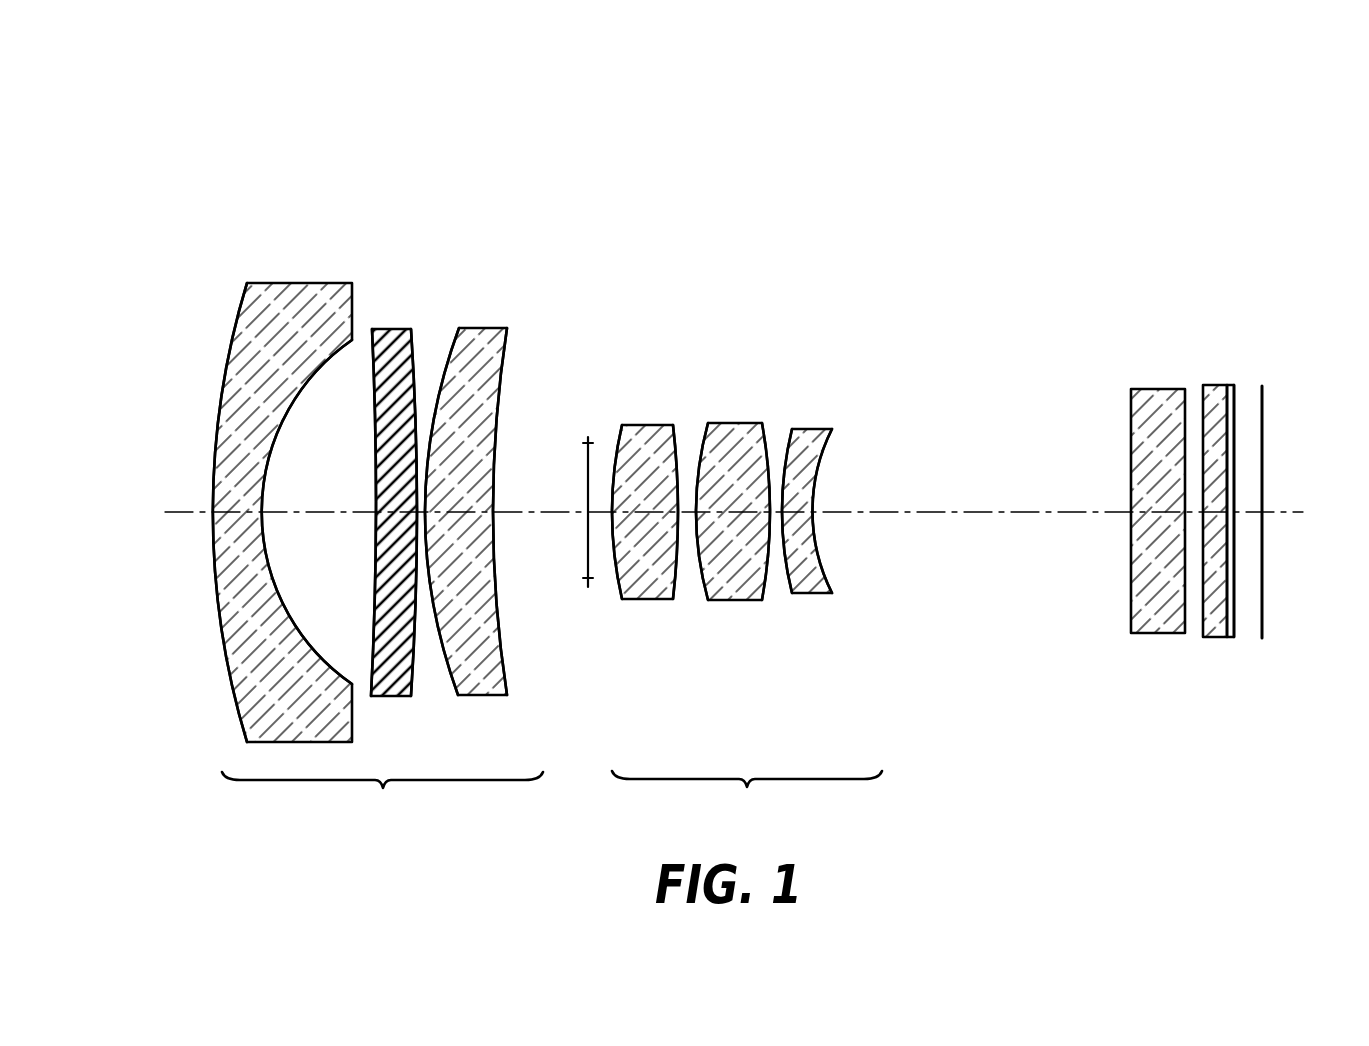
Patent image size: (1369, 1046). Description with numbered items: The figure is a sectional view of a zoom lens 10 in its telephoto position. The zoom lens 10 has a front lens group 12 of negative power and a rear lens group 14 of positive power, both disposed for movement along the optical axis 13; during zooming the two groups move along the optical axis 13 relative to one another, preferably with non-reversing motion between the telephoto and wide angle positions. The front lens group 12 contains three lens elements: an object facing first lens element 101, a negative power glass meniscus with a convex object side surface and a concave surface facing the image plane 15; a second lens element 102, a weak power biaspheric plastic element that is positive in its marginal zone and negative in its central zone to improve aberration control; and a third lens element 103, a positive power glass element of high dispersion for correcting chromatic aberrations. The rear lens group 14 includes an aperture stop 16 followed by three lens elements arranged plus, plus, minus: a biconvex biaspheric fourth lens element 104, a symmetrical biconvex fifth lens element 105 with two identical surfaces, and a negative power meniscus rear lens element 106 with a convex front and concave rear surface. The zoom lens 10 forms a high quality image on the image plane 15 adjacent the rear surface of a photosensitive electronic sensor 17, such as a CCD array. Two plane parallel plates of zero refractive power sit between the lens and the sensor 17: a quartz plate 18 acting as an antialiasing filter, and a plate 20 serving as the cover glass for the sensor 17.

The zoom lens 10 is at (903, 149).
The front lens group 12 is at (382, 797).
The optical axis 13 is at (1280, 514).
The rear lens group 14 is at (747, 796).
The image plane 15 is at (1264, 440).
The aperture stop 16 is at (588, 437).
The photosensitive electronic sensor 17 is at (1231, 385).
The quartz plate 18 is at (1150, 389).
The cover glass plate 20 is at (1212, 385).
The first lens element 101 is at (247, 283).
The second lens element 102 is at (378, 329).
The third lens element 103 is at (505, 328).
The fourth lens element 104 is at (637, 425).
The fifth lens element 105 is at (720, 423).
The rear lens element 106 is at (816, 429).